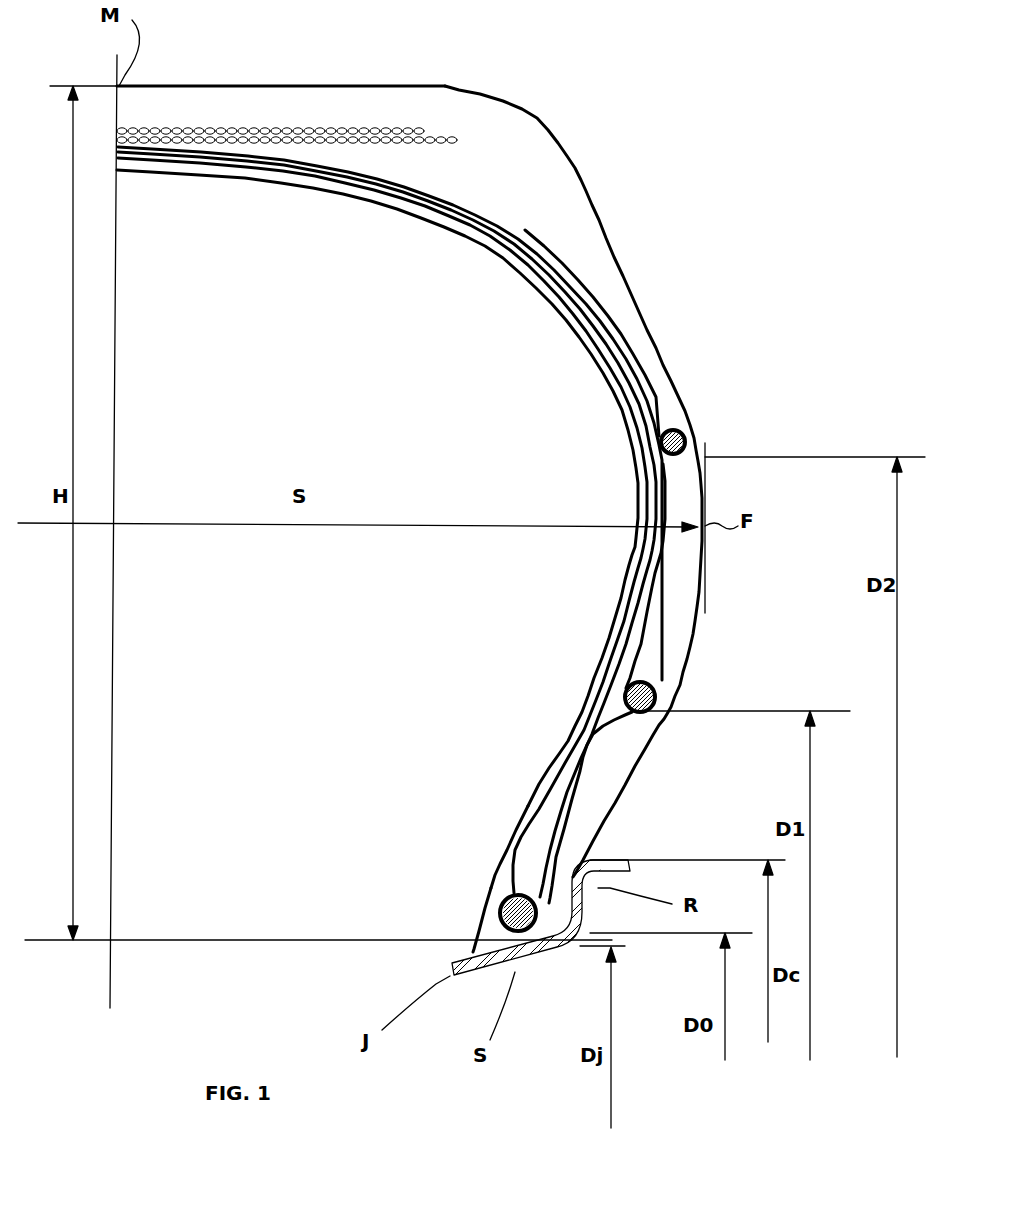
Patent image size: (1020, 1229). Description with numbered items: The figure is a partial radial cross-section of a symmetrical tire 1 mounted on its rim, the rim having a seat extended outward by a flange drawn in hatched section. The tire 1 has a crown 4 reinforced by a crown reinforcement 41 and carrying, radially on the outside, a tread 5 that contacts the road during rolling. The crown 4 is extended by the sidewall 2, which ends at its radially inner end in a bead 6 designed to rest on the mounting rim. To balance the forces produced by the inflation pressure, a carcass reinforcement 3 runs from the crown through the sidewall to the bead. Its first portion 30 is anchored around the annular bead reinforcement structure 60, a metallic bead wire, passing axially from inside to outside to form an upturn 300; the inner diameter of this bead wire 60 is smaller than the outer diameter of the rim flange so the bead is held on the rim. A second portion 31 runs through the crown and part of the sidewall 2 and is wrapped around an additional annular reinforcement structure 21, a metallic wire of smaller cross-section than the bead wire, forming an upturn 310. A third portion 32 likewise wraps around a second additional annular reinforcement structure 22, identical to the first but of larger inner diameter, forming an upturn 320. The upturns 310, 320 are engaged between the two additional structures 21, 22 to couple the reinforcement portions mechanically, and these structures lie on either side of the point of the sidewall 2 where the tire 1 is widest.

The tire 1 is at (608, 178).
The sidewall 2 is at (683, 570).
The carcass reinforcement 3 is at (512, 233).
The crown 4 is at (335, 128).
The tread 5 is at (244, 103).
The bead 6 is at (485, 920).
The additional annular reinforcement structure 21 is at (637, 712).
The second additional annular reinforcement structure 22 is at (686, 432).
The first portion of the carcass reinforcement 30 is at (510, 884).
The second portion of the carcass reinforcement 31 is at (625, 565).
The third portion of the carcass reinforcement 32 is at (617, 337).
The crown reinforcement 41 is at (205, 128).
The bead reinforcement structure 60 is at (503, 935).
The upturn 300 is at (560, 835).
The upturn 310 is at (665, 630).
The upturn 320 is at (640, 356).